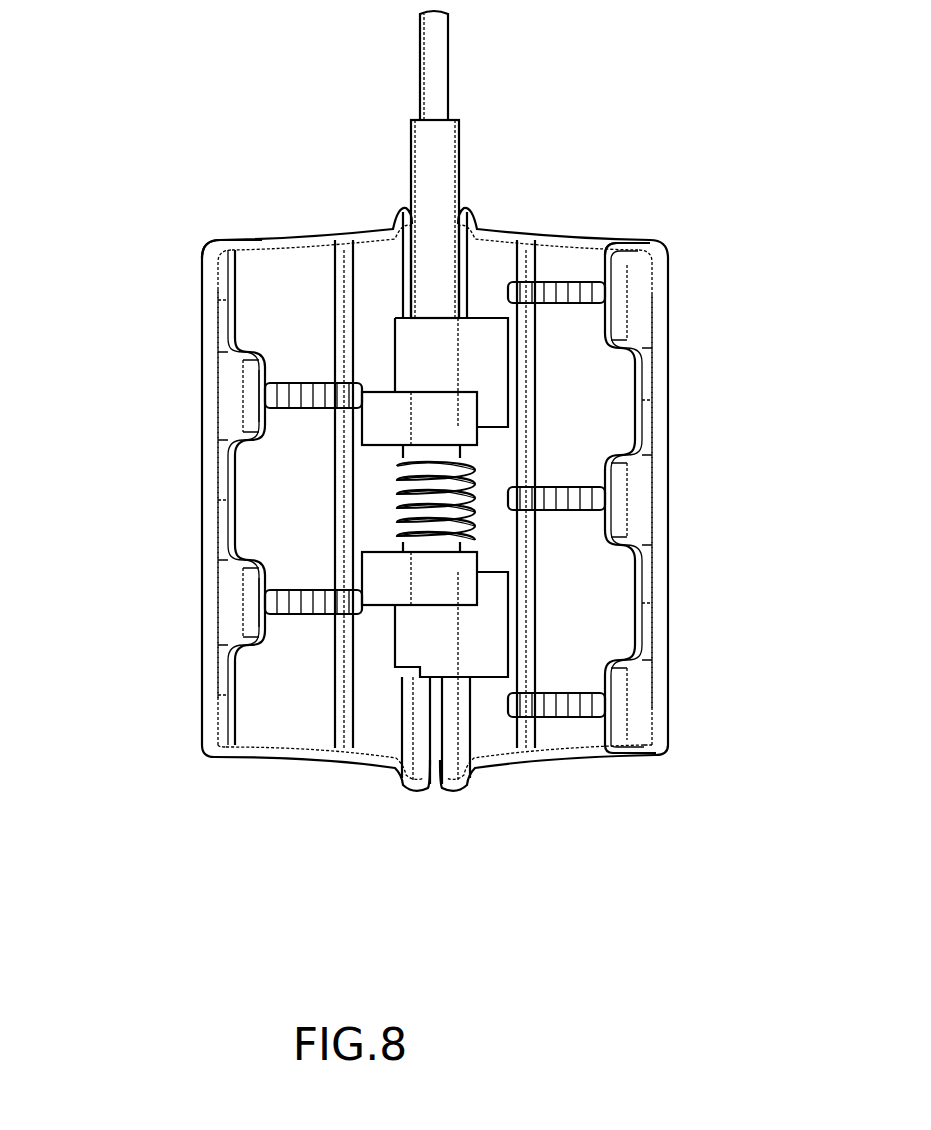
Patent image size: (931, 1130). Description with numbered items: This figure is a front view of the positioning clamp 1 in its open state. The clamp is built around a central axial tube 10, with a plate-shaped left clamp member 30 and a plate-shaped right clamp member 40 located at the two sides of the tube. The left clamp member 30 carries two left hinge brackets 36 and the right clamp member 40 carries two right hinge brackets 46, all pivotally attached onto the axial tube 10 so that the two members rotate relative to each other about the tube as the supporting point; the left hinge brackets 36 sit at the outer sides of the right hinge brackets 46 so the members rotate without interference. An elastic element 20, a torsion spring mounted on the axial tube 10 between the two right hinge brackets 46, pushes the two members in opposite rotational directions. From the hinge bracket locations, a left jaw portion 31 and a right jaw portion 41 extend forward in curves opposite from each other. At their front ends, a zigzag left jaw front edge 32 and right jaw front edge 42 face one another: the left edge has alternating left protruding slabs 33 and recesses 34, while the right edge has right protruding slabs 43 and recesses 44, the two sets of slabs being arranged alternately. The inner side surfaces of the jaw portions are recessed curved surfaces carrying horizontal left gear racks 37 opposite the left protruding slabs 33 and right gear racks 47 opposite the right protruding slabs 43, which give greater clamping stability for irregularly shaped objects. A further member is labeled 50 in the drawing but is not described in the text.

The positioning clamp 1 is at (166, 223).
The axial tube 10 is at (447, 150).
The elastic element 20 is at (438, 535).
The left clamp member 30 is at (497, 237).
The left jaw portion 31 is at (587, 245).
The left jaw front edge 32 is at (738, 288).
The left protruding slab 33 is at (632, 305).
The recess 34 is at (645, 400).
The left hinge bracket 36 is at (483, 333).
The left gear rack 37 is at (593, 292).
The right clamp member 40 is at (395, 236).
The right jaw portion 41 is at (244, 250).
The right jaw front edge 42 is at (134, 285).
The right protruding slab 43 is at (248, 396).
The recess 44 is at (228, 300).
The right hinge bracket 46 is at (383, 405).
The right gear rack 47 is at (305, 378).
The cable 50 is at (432, 42).